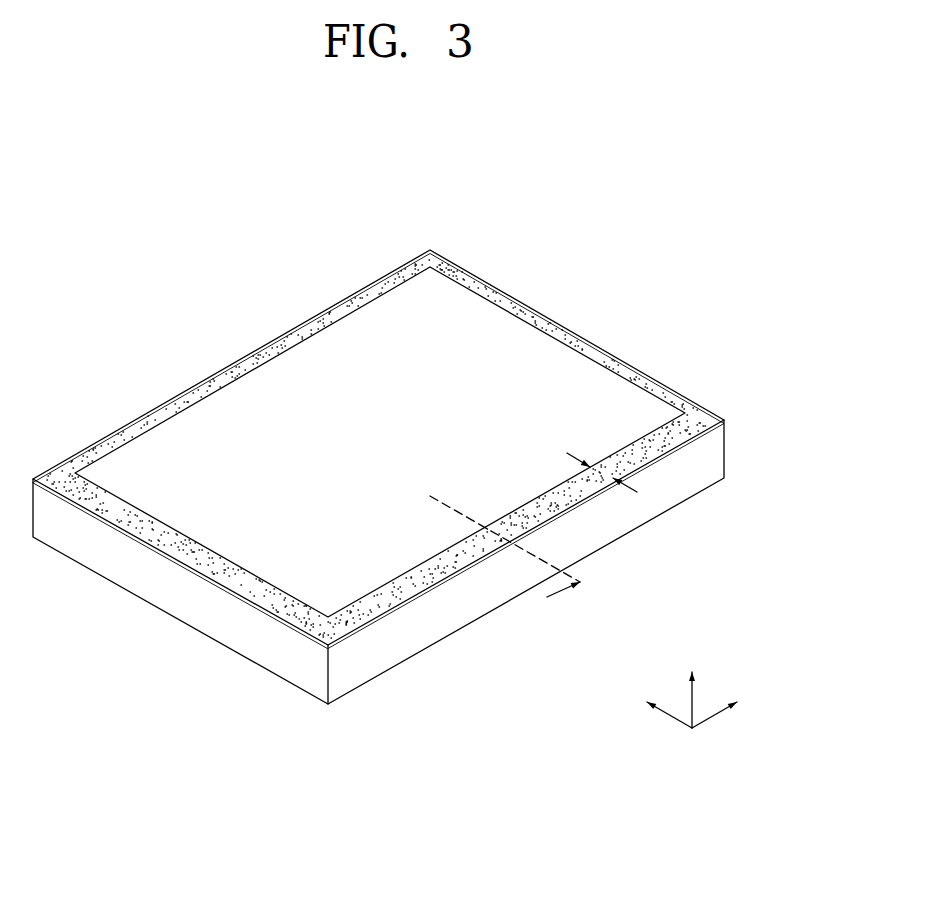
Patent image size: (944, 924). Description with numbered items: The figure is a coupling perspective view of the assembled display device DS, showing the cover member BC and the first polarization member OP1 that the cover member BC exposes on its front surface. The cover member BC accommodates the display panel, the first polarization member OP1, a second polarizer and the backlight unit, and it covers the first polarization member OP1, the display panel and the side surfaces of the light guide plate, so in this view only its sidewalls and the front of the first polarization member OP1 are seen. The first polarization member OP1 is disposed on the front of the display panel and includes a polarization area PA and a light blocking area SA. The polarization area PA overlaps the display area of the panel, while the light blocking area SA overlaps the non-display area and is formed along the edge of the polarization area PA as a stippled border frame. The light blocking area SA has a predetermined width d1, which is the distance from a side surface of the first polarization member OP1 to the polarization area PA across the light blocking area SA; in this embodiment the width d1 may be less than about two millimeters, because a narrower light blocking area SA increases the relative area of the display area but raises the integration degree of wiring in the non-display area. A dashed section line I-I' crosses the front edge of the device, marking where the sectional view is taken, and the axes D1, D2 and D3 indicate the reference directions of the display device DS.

The display device DS is at (412, 441).
The cover member BC is at (712, 455).
The first polarization member OP1 is at (376, 428).
The polarization area PA is at (460, 313).
The light blocking area SA is at (537, 323).
The width of the light blocking area d1 is at (598, 472).
The line I-I' I is at (487, 539).
The line I- I' is at (557, 598).
The first direction D1 is at (727, 710).
The second direction D2 is at (657, 710).
The third direction D3 is at (693, 686).